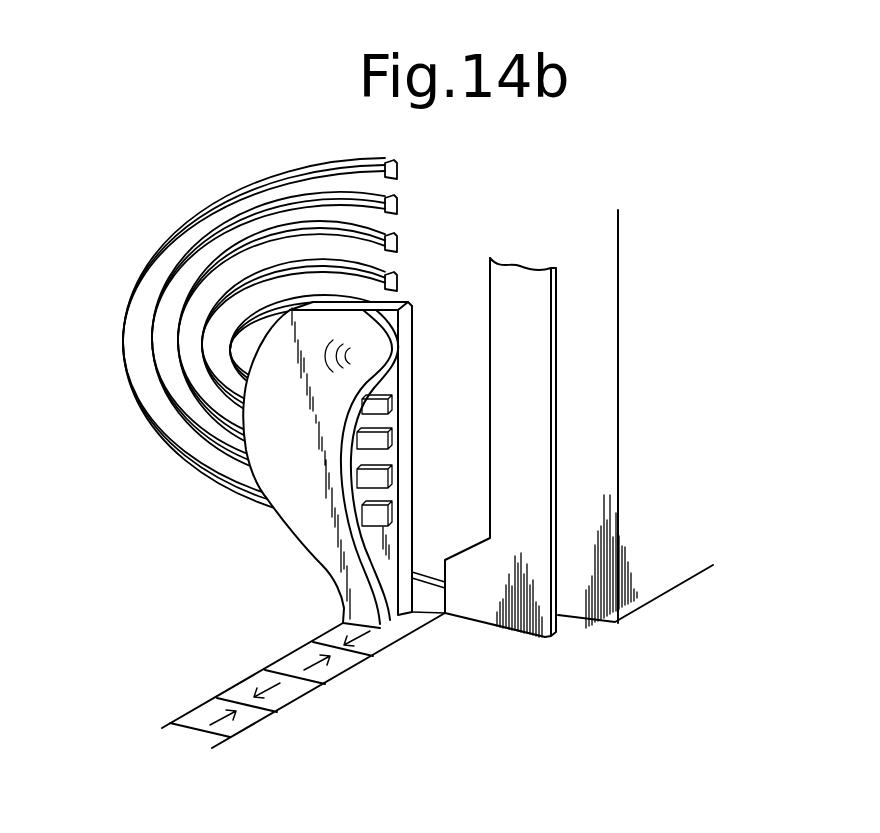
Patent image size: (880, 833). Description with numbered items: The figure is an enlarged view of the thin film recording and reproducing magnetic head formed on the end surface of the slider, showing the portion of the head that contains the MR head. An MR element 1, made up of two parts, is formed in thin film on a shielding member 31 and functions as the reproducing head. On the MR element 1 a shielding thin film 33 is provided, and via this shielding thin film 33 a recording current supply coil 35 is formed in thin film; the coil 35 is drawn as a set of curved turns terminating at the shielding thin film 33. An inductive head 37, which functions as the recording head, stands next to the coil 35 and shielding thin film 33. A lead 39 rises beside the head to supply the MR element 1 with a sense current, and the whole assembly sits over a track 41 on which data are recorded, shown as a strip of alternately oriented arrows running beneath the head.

The recording current supply coil 35 is at (157, 270).
The inductive head 37 is at (290, 500).
The shielding thin film 33 is at (410, 306).
The MR element 1 is at (434, 603).
The lead 39 is at (517, 270).
The track 41 is at (247, 695).
The shielding member 31 is at (653, 585).